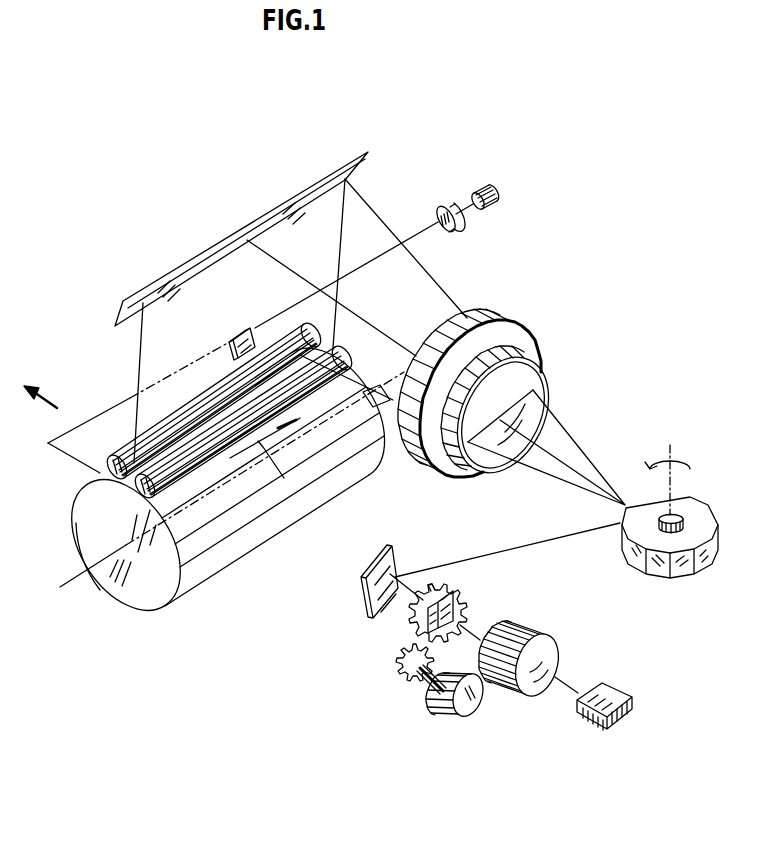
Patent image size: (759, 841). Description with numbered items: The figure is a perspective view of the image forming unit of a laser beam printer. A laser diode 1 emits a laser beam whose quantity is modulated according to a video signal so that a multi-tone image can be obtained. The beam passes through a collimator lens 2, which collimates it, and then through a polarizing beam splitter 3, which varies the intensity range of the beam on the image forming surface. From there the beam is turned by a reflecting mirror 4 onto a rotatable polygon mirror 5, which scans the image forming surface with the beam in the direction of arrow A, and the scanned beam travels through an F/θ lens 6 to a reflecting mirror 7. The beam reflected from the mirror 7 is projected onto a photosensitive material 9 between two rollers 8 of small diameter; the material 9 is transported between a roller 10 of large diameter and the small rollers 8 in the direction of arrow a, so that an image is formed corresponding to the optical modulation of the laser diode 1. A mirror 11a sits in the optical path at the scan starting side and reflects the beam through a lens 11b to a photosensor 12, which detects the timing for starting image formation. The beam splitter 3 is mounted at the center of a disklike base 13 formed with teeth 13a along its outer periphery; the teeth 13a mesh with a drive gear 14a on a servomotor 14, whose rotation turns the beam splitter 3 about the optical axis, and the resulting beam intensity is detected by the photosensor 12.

The laser diode 1 is at (620, 722).
The collimator lens 2 is at (503, 677).
The polarizing beam splitter 3 is at (456, 604).
The reflecting mirror 4 is at (367, 606).
The polygon mirror 5 is at (700, 506).
The F/θ lens 6 is at (507, 316).
The reflecting mirror 7 is at (272, 205).
The rollers of small diameter 8 is at (143, 481).
The photosensitive material 9 is at (208, 513).
The roller of large diameter 10 is at (135, 610).
The mirror 11a is at (236, 357).
The lens 11b is at (446, 204).
The photosensor 12 is at (497, 207).
The disklike base 13 is at (410, 625).
The teeth 13a is at (443, 588).
The servomotor 14 is at (447, 715).
The drive gear 14a is at (415, 682).